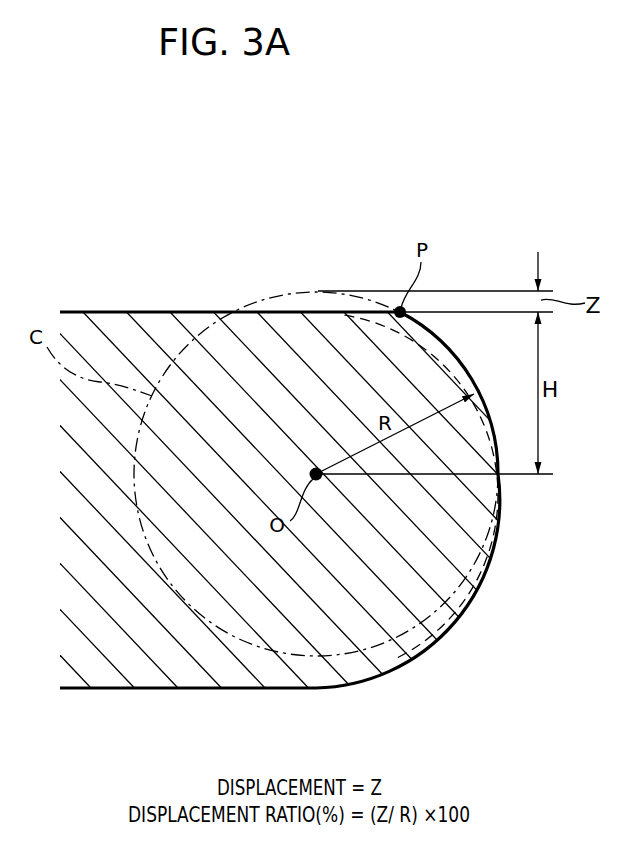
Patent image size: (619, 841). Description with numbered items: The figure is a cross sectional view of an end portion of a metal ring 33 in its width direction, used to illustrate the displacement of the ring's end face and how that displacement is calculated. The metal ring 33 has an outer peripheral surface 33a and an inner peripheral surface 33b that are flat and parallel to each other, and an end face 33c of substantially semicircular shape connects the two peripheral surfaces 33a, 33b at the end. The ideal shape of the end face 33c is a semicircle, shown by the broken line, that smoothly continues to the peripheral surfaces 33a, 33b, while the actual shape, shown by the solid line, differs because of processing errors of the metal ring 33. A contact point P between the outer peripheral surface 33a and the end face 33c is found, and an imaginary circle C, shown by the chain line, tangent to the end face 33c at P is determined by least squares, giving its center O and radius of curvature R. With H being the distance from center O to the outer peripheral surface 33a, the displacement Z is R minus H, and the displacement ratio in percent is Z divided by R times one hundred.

The metal ring 33 is at (104, 300).
The outer peripheral surface 33a is at (173, 311).
The inner peripheral surface 33b is at (157, 690).
The end face 33c is at (490, 573).